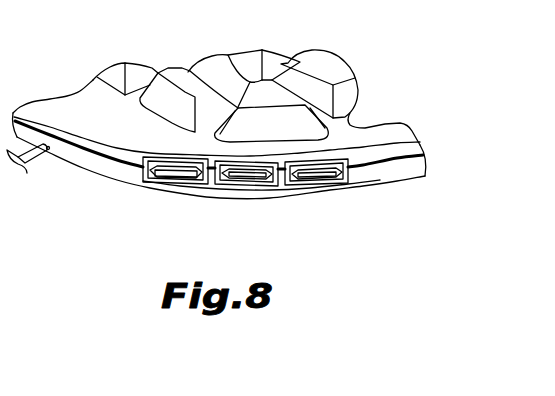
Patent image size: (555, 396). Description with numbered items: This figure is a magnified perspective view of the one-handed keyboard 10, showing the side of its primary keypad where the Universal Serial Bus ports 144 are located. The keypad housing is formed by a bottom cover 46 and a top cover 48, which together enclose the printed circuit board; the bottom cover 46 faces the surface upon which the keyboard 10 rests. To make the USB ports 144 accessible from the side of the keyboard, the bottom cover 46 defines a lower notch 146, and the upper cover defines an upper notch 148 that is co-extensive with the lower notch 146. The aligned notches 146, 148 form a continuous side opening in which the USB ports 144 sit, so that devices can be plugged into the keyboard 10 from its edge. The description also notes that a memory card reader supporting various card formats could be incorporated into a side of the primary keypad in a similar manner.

The one-handed keyboard 10 is at (303, 218).
The bottom cover 46 is at (125, 177).
The top cover 48 is at (97, 153).
The USB ports 144 is at (175, 179).
The lower notch 146 is at (197, 182).
The upper notch 148 is at (183, 165).